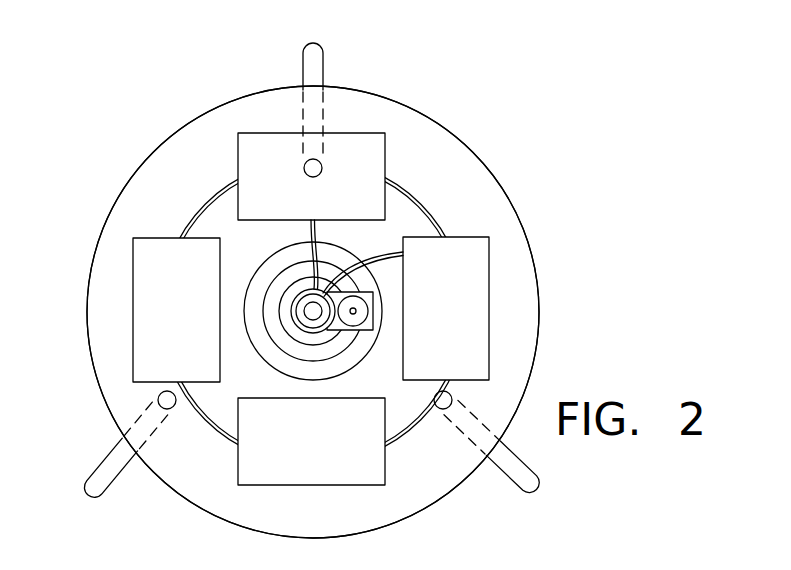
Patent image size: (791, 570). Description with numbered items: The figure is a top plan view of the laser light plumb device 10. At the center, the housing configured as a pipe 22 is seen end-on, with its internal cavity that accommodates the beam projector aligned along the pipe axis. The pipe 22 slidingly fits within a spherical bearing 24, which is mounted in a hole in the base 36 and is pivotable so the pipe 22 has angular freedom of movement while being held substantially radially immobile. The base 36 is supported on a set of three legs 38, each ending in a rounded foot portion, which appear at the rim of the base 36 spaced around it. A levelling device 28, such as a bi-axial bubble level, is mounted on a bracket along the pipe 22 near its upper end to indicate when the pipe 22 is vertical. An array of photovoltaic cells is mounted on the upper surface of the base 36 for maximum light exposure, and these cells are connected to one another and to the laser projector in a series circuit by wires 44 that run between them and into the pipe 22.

The laser light plumb device 10 is at (589, 248).
The pipe 22 is at (288, 311).
The spherical bearing 24 is at (320, 367).
The levelling device 28 is at (363, 333).
The base 36 is at (447, 177).
The legs 38 is at (323, 59).
The wires 44 is at (193, 196).